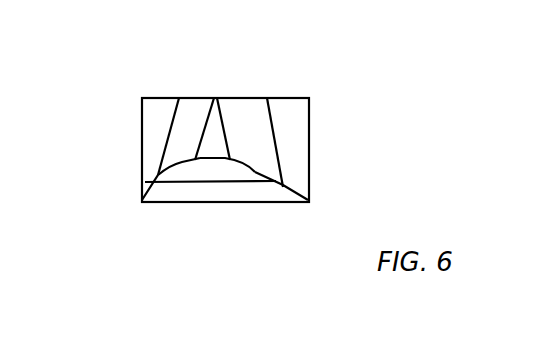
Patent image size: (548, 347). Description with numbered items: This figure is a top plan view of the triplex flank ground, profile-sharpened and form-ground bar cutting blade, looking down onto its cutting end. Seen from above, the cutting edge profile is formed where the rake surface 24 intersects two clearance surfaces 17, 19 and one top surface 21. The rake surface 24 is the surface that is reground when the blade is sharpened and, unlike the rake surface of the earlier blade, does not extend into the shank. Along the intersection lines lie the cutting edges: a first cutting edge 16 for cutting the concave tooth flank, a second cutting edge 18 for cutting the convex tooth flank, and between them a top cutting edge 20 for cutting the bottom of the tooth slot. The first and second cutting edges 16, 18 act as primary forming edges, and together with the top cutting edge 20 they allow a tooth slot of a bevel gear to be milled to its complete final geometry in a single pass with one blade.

The first cutting edge 16 is at (178, 170).
The clearance surface 17 is at (202, 108).
The second cutting edge 18 is at (258, 175).
The clearance surface 19 is at (249, 117).
The top cutting edge 20 is at (207, 158).
The top surface 21 is at (212, 130).
The rake surface 24 is at (230, 173).